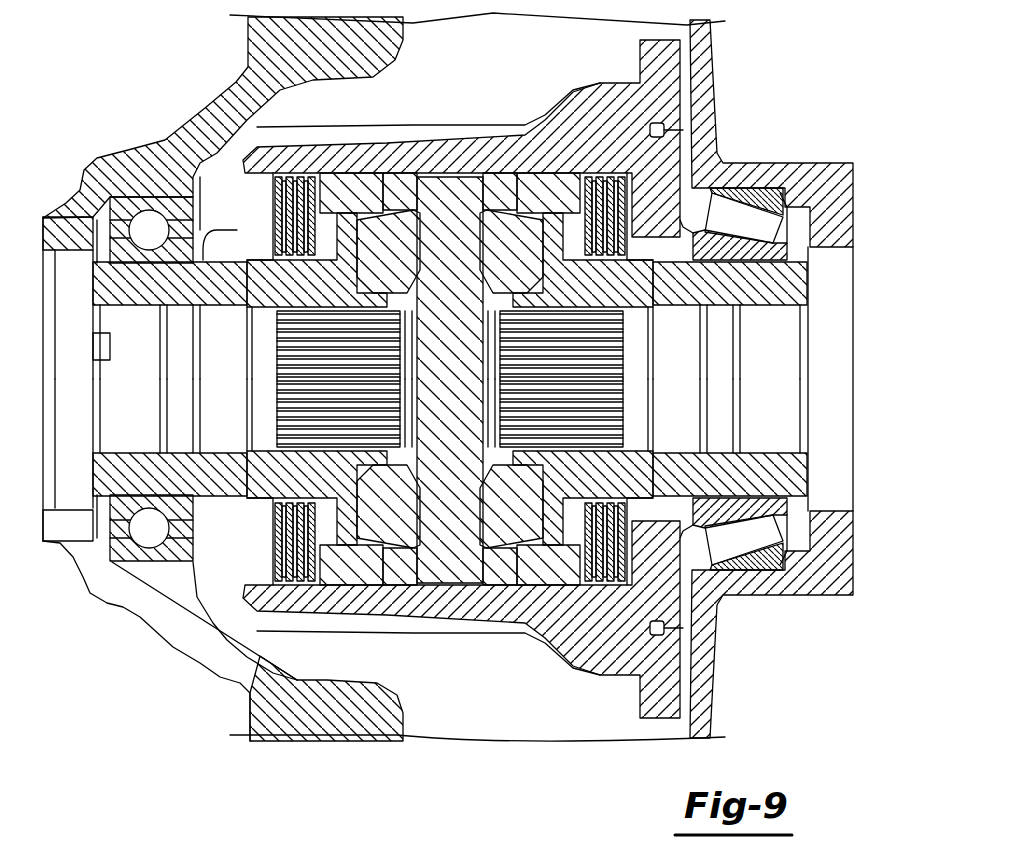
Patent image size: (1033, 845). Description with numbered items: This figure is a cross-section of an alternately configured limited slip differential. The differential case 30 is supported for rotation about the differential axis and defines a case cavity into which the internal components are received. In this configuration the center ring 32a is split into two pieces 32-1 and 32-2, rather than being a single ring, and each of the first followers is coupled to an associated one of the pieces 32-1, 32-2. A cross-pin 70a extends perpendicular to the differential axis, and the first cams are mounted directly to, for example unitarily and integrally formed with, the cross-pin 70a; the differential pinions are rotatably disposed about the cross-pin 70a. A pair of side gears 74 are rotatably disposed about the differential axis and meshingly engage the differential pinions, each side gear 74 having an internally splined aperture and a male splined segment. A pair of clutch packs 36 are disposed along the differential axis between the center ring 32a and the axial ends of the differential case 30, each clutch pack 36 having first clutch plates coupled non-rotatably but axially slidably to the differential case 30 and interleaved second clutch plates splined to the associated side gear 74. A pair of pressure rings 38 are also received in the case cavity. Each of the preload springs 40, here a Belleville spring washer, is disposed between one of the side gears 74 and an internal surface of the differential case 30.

The differential case 30 is at (255, 544).
The center ring 32a is at (450, 294).
The first piece of the center ring 32-1 is at (403, 183).
The second piece of the center ring 32-2 is at (500, 187).
The clutch pack 36 is at (273, 181).
The pressure ring 38 is at (565, 185).
The preload spring 40 is at (283, 548).
The cross-pin 70a is at (458, 385).
The side gear 74 is at (320, 470).